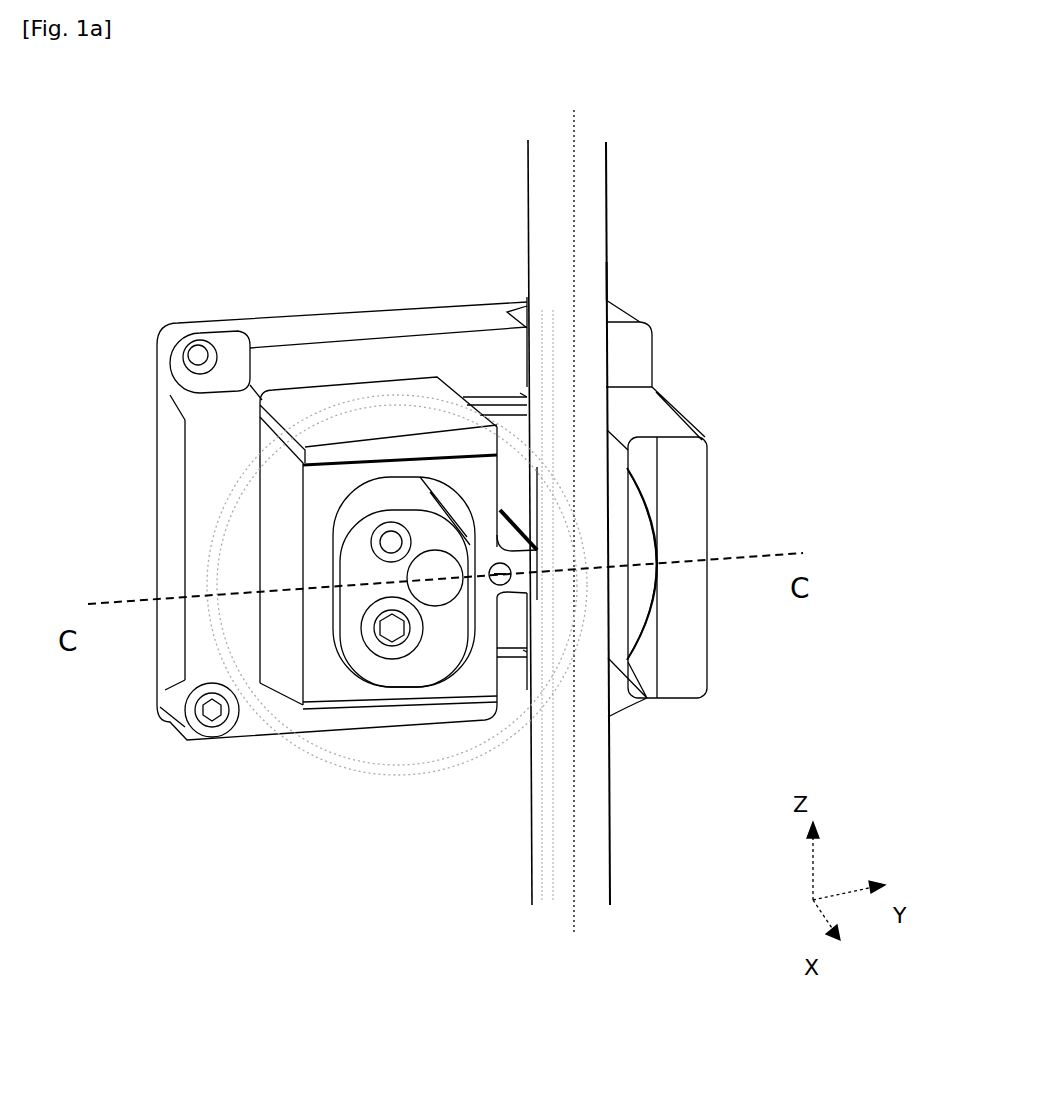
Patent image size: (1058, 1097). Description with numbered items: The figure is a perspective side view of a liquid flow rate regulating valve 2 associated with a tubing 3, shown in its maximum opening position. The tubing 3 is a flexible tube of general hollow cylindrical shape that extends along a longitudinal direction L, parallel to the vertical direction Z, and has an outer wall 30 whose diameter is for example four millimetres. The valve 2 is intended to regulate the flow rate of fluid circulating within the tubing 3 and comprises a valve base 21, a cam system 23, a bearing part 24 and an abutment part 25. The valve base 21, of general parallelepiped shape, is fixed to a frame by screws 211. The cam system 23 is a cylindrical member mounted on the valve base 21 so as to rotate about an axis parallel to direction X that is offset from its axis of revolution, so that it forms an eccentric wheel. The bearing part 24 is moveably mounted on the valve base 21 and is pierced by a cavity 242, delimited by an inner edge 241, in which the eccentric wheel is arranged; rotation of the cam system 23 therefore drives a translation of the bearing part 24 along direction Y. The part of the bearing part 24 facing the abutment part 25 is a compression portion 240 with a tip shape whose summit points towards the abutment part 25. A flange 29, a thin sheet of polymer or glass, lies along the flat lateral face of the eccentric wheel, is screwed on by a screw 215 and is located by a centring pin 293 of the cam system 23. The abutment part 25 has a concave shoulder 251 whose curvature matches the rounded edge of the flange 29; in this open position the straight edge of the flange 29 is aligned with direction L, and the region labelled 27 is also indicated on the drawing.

The liquid flow rate regulating valve 2 is at (732, 630).
The tubing 3 is at (595, 172).
The valve base 21 is at (637, 330).
The cam system 23 is at (433, 523).
The bearing part 24 is at (257, 717).
The abutment part 25 is at (692, 491).
The fastening portion 27 is at (520, 393).
The flange 29 is at (365, 783).
The outer wall 30 is at (608, 262).
The screws 211 is at (190, 737).
The screw 215 is at (282, 470).
The compression portion 240 is at (515, 566).
The inner edge 241 is at (355, 683).
The cavity 242 is at (430, 662).
The shoulder 251 is at (640, 602).
The centring pin 293 is at (388, 540).